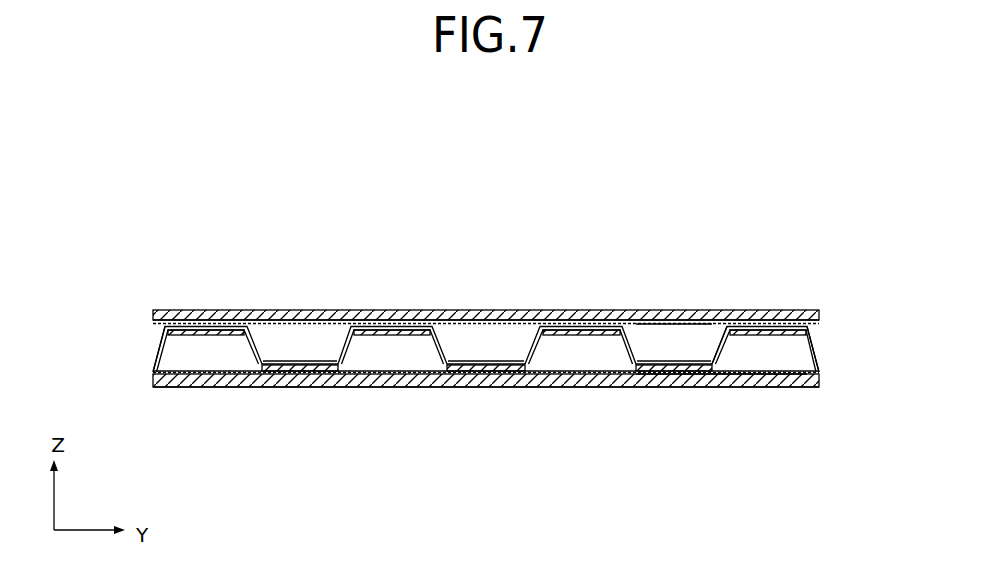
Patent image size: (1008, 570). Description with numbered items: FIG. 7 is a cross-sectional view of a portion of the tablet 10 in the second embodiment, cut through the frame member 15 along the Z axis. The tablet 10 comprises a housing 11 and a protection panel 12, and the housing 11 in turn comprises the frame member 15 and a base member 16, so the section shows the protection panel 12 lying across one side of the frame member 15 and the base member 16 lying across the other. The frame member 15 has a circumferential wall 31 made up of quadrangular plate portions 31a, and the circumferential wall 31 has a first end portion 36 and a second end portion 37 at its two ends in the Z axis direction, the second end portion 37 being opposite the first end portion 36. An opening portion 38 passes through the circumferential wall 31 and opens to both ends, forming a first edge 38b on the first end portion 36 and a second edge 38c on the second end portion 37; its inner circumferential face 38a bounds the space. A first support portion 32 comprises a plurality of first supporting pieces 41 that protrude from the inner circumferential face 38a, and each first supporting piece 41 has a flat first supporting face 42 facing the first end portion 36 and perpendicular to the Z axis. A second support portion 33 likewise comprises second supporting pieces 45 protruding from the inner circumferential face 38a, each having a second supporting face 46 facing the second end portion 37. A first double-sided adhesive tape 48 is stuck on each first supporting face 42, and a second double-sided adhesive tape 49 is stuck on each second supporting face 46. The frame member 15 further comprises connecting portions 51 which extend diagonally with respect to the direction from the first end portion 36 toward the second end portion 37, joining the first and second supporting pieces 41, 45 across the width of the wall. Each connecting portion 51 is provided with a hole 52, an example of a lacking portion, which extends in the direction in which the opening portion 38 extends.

The tablet 10 is at (272, 250).
The housing 11 is at (253, 460).
The protection panel 12 is at (300, 310).
The frame member 15 is at (193, 388).
The base member 16 is at (225, 388).
The circumferential wall 31 is at (366, 356).
The plate portion 31a is at (400, 353).
The first support portion 32 is at (548, 230).
The second support portion 33 is at (635, 438).
The first end portion 36 is at (770, 310).
The second end portion 37 is at (783, 388).
The opening portion 38 is at (642, 325).
The inner circumferential face 38a is at (663, 345).
The first edge 38b is at (690, 310).
The second edge 38c is at (755, 388).
The first supporting piece 41 is at (185, 312).
The first supporting face 42 is at (203, 312).
The second supporting piece 45 is at (263, 372).
The second supporting face 46 is at (288, 372).
The first double-sided adhesive tape 48 is at (168, 310).
The second double-sided adhesive tape 49 is at (485, 371).
The connecting portion 51 is at (162, 388).
The hole 52 is at (160, 342).